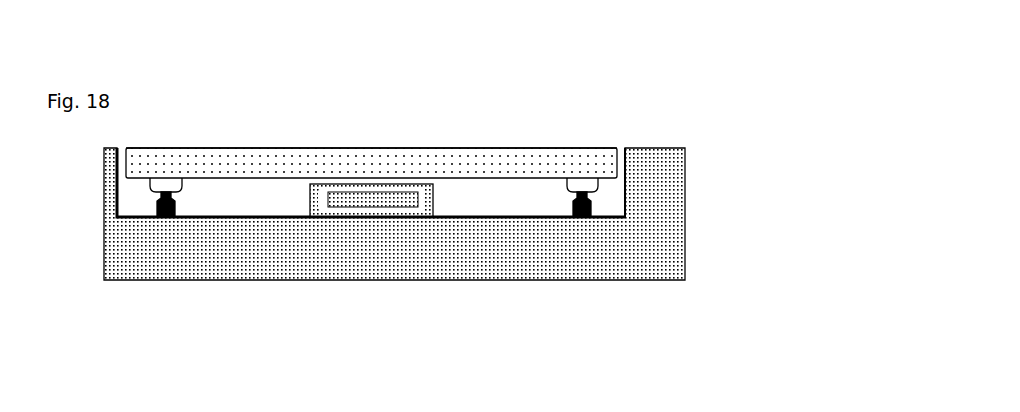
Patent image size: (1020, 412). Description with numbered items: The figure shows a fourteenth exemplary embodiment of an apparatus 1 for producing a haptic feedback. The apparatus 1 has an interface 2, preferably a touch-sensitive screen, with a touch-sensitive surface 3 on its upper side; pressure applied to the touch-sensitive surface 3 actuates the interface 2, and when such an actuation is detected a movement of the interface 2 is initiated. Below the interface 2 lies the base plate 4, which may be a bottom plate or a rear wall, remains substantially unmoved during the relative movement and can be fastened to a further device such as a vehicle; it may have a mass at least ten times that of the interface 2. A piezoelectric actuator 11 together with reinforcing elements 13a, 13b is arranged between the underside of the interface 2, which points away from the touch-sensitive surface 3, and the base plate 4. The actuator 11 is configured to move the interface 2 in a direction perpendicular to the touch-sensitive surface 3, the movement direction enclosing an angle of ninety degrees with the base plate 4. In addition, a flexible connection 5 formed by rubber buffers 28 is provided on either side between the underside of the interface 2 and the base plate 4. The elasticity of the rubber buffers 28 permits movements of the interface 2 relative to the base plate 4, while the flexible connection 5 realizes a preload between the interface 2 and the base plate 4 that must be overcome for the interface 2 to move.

The apparatus 1 is at (354, 109).
The interface 2 is at (510, 173).
The touch-sensitive surface 3 is at (412, 148).
The base plate 4 is at (607, 238).
The flexible connection 5 is at (156, 197).
The piezoelectric actuator 11 is at (355, 205).
The reinforcing element 13a is at (333, 186).
The reinforcing element 13b is at (373, 217).
The rubber buffer 28 is at (158, 206).